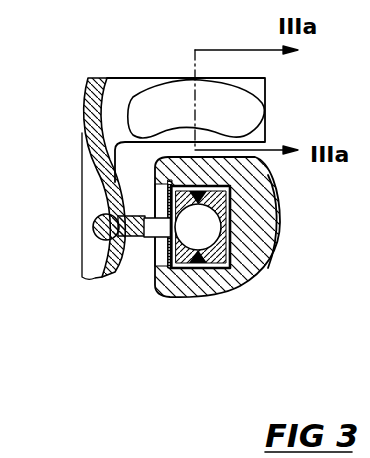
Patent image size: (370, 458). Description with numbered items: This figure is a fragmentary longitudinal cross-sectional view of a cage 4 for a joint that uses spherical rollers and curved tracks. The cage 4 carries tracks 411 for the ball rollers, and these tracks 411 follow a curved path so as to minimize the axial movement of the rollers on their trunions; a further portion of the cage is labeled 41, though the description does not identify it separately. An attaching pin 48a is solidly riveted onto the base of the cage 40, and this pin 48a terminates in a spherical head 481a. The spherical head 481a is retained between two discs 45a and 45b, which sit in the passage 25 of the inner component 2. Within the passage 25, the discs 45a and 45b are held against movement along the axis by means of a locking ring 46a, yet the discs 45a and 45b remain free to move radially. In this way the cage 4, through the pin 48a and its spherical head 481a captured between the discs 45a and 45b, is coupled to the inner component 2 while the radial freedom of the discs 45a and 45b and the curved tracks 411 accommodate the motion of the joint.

The inner component 2 is at (252, 203).
The passage 25 is at (273, 235).
The cage 4 is at (88, 95).
The base of the cage 40 is at (98, 164).
The top block 41 is at (135, 87).
The track 411 is at (168, 102).
The disc 45a is at (181, 262).
The disc 45b is at (205, 233).
The locking ring 46a is at (168, 252).
The attaching pin 48a is at (149, 222).
The spherical head 481a is at (232, 268).